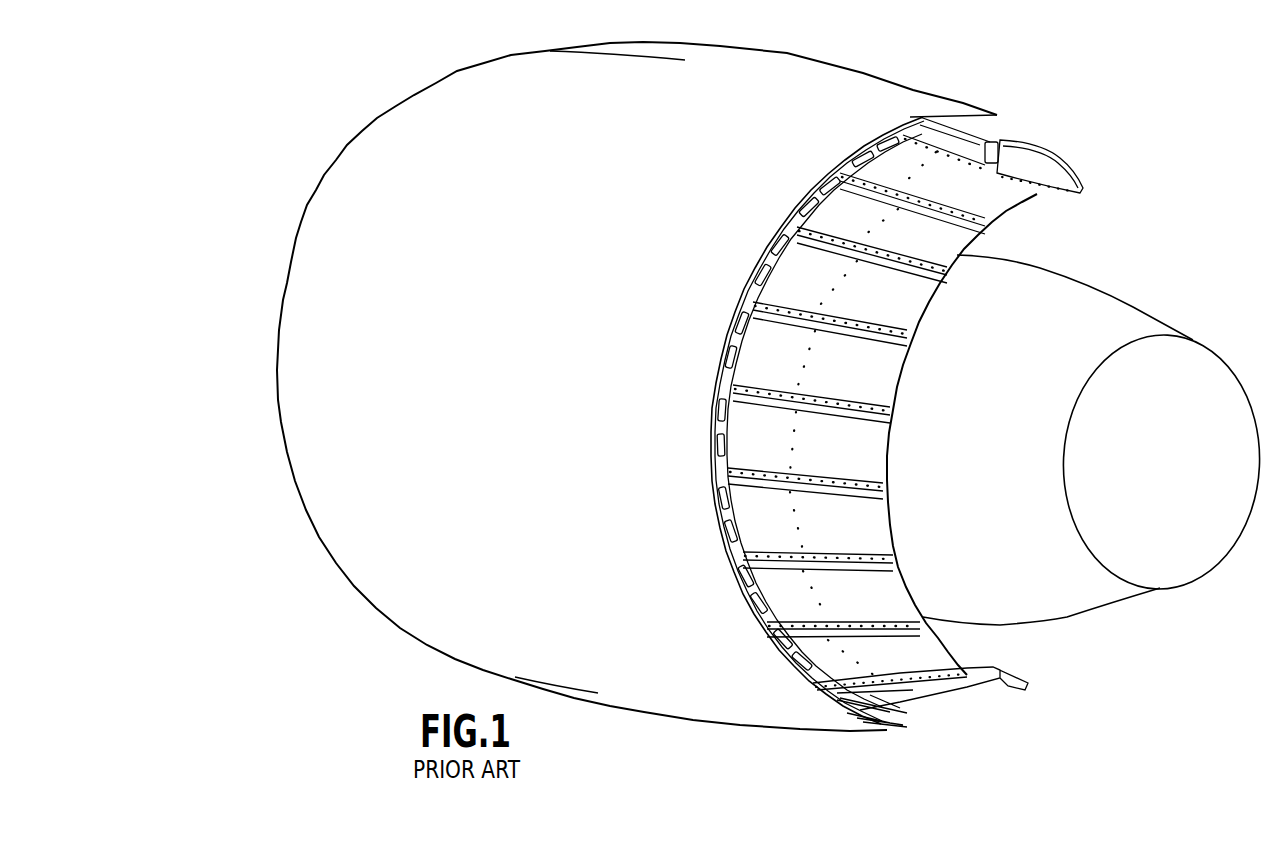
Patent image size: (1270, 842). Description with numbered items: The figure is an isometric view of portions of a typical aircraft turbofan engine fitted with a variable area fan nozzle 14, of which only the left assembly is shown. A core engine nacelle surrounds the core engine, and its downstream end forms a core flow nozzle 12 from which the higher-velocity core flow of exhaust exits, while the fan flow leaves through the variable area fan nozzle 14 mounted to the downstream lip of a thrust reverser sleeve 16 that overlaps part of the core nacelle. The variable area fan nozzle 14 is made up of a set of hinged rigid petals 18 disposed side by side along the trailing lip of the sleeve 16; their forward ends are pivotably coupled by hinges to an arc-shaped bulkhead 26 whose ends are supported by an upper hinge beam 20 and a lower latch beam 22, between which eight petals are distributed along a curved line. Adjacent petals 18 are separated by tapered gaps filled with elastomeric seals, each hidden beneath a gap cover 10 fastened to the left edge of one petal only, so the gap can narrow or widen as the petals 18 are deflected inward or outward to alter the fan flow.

The gap cover 10 is at (940, 282).
The core flow nozzle 12 is at (1125, 305).
The variable area fan nozzle 14 is at (920, 378).
The thrust reverser sleeve 16 is at (852, 67).
The hinged rigid petal 18 is at (978, 237).
The hinge beam 20 is at (1057, 167).
The latch beam 22 is at (963, 700).
The bulkhead 26 is at (907, 130).